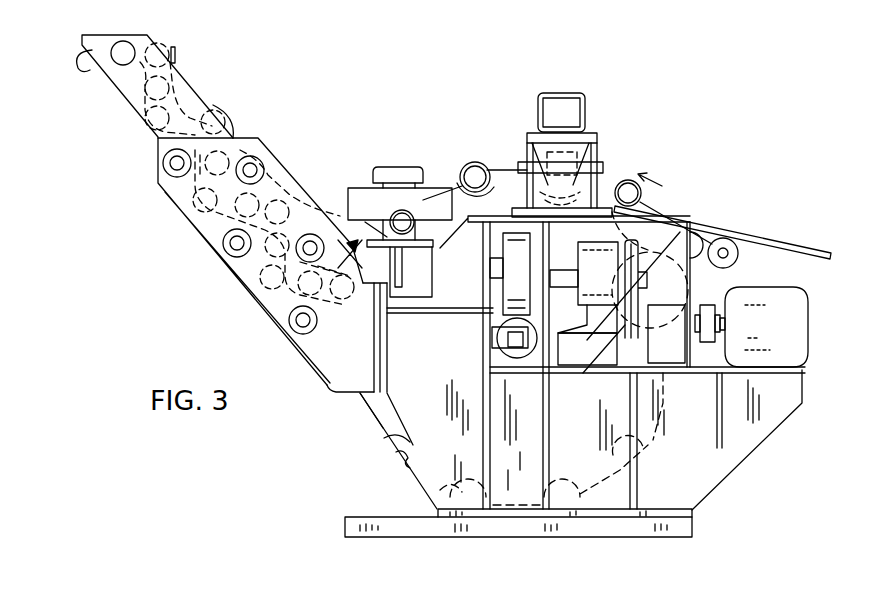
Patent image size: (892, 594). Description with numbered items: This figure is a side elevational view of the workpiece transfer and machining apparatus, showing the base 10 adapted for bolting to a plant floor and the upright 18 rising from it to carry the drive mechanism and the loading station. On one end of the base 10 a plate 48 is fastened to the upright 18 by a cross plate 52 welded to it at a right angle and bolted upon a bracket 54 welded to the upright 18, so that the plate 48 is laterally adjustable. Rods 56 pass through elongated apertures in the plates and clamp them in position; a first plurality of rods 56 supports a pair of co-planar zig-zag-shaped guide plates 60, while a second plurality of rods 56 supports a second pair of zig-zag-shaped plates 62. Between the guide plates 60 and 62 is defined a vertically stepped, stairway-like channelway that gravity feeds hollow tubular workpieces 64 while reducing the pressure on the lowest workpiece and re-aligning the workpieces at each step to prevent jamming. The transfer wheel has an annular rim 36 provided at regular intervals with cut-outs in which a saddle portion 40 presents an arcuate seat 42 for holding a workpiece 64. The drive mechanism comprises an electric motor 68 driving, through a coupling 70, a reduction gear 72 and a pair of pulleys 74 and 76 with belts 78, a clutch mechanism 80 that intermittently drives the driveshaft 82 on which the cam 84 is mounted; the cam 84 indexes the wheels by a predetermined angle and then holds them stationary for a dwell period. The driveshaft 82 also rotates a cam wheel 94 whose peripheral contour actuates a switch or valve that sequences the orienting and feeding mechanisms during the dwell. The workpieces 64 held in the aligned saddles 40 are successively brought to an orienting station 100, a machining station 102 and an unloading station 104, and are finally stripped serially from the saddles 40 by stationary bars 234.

The base 10 is at (670, 538).
The upright 18 is at (754, 438).
The annular rim 36 is at (373, 426).
The saddle portion 40 is at (387, 449).
The arcuate seat 42 is at (393, 470).
The plate 48 is at (322, 393).
The cross plate 52 is at (386, 345).
The bracket 54 is at (389, 363).
The rods 56 is at (256, 167).
The guide plates 60 is at (82, 66).
The zig zag-shaped plates 62 is at (177, 52).
The hollow tubular workpieces 64 is at (128, 35).
The electric motor 68 is at (780, 292).
The coupling 70 is at (707, 305).
The reduction gear 72 is at (705, 398).
The pulley 74 is at (591, 360).
The pulley 76 is at (654, 249).
The belts 78 is at (713, 238).
The clutch mechanism 80 is at (598, 273).
The driveshaft 82 is at (553, 270).
The cam 84 is at (500, 244).
The cam wheel 94 is at (635, 302).
The orienting station 100 is at (400, 152).
The machining station 102 is at (612, 100).
The unloading station 104 is at (665, 187).
The stationary bars 234 is at (775, 240).